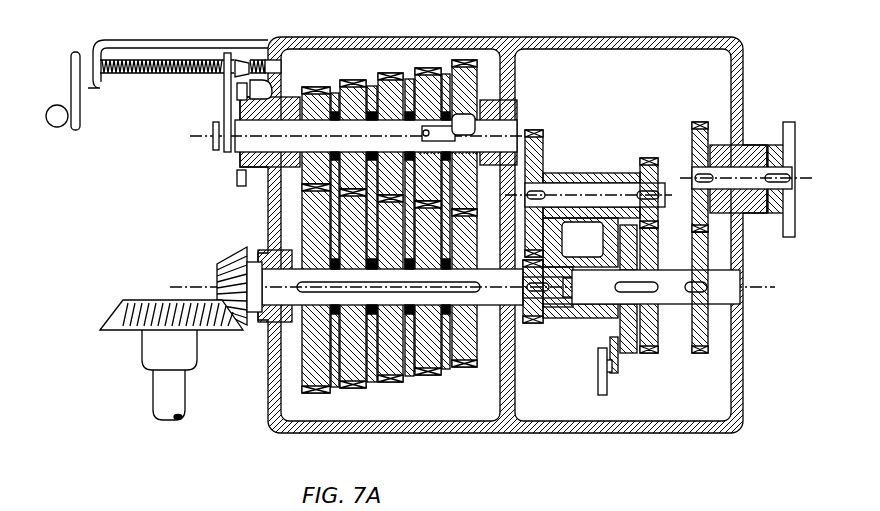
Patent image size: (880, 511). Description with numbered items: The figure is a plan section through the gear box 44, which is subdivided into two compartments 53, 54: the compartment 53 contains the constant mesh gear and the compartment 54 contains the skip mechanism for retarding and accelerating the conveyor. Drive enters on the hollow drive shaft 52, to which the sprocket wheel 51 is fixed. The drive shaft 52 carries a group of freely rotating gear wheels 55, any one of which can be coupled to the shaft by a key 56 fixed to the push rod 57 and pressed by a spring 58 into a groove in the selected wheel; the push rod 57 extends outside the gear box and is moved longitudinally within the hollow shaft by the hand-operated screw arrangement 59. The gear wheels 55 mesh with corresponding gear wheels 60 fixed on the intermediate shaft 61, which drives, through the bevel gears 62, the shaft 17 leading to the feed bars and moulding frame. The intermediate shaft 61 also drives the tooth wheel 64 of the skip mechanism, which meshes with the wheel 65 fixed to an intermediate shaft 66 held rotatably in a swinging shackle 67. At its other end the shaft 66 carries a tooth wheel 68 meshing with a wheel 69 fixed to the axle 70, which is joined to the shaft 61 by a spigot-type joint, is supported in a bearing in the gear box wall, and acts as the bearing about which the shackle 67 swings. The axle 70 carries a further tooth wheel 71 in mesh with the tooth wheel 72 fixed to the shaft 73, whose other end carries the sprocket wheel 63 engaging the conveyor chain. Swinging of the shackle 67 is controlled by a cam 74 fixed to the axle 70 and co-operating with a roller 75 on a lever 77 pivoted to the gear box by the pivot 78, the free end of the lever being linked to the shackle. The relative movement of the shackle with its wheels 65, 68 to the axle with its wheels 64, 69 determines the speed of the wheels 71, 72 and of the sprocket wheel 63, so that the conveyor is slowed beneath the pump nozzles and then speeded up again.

The shaft 17 is at (177, 395).
The gear box 44 is at (445, 433).
The sprocket wheel 51 is at (238, 173).
The drive shaft 52 is at (238, 154).
The compartment 53 is at (473, 409).
The compartment 54 is at (530, 410).
The gear wheels 55 is at (455, 62).
The key 56 is at (448, 127).
The push rod 57 is at (332, 140).
The spring 58 is at (478, 143).
The hand-operated screw arrangement 59 is at (195, 73).
The gear wheels 60 is at (365, 385).
The intermediate shaft 61 is at (290, 287).
The bevel gears 62 is at (181, 308).
The sprocket wheel 63 is at (788, 123).
The tooth wheel 64 is at (530, 324).
The tooth wheel 65 is at (540, 132).
The intermediate shaft 66 is at (595, 203).
The swinging shackle 67 is at (591, 240).
The tooth wheel 68 is at (648, 158).
The tooth wheel 69 is at (656, 262).
The axle 70 is at (679, 293).
The tooth wheel 71 is at (700, 354).
The tooth wheel 72 is at (700, 122).
The shaft 73 is at (742, 186).
The cam 74 is at (612, 326).
The roller 75 is at (626, 352).
The lever 77 is at (614, 374).
The pivot 78 is at (598, 368).